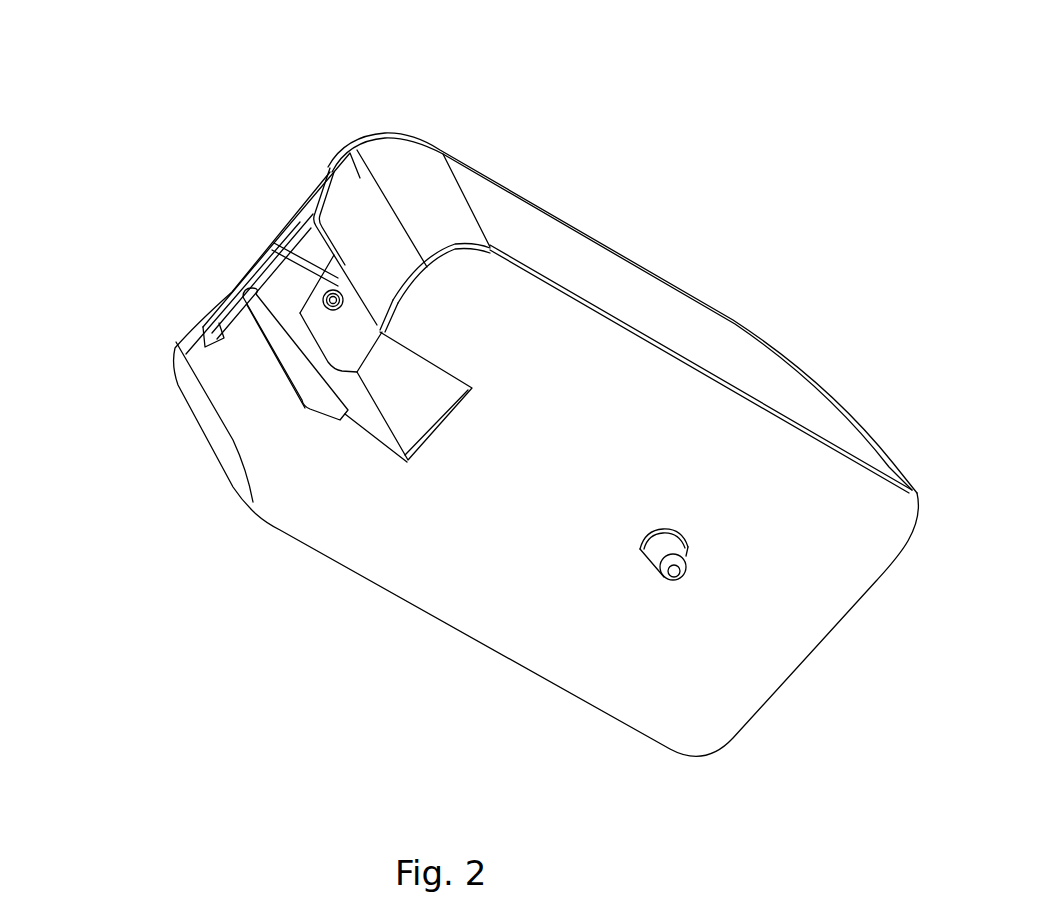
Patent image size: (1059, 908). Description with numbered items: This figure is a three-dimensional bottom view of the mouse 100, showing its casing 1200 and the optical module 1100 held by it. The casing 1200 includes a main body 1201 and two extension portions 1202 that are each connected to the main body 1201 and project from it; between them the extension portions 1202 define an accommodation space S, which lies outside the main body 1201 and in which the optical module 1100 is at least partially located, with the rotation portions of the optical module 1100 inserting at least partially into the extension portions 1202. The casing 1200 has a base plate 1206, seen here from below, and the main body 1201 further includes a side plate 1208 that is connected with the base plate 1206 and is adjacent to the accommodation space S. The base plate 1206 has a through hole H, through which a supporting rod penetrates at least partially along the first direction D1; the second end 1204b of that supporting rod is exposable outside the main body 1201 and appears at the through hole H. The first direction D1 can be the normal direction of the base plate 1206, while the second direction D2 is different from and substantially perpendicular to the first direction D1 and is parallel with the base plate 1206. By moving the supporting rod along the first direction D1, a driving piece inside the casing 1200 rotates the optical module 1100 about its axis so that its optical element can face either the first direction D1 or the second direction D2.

The mouse 100 is at (52, 83).
The optical module 1100 is at (320, 320).
The casing 1200 is at (607, 68).
The main body 1201 is at (513, 213).
The extension portions 1202 is at (222, 347).
The base plate 1206 is at (563, 318).
The side plate 1208 is at (427, 390).
The second end 1204b is at (662, 578).
The through hole H is at (643, 576).
The accommodation space S is at (282, 298).
The first direction D1 is at (420, 688).
The second direction D2 is at (420, 688).